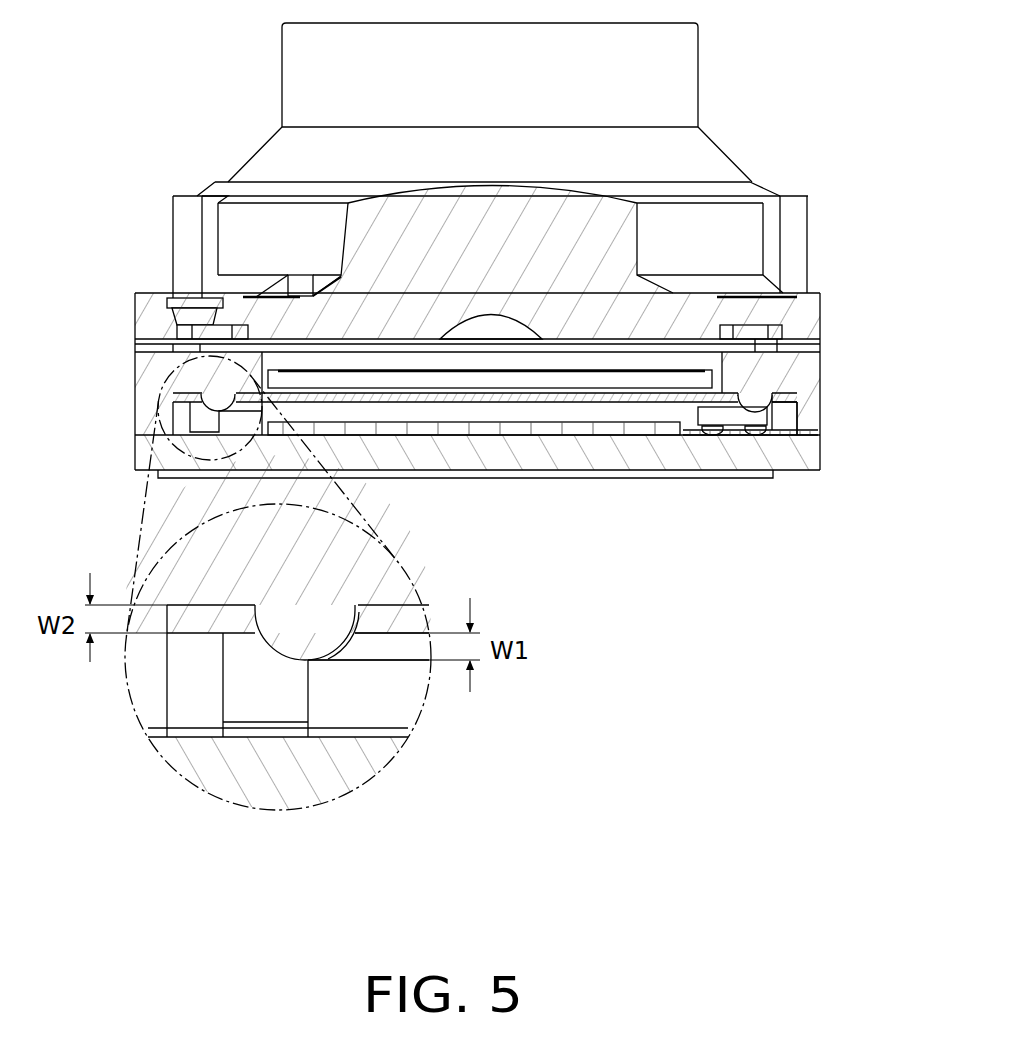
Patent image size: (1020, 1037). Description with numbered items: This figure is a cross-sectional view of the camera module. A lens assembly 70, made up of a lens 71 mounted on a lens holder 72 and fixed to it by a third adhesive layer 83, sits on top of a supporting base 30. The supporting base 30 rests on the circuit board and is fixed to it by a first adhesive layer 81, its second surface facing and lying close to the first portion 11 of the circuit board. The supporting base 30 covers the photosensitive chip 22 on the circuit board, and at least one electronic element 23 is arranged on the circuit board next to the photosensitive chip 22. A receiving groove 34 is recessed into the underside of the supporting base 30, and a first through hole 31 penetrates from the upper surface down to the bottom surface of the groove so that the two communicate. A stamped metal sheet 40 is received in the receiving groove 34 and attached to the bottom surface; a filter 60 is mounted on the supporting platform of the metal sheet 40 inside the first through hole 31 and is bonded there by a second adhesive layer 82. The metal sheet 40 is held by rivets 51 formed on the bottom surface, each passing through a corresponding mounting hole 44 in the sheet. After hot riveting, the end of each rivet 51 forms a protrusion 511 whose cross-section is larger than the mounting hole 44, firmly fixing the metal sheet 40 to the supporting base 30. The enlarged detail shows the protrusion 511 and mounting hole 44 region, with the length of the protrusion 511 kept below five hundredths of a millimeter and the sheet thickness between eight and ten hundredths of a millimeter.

The lens assembly 70 is at (122, 152).
The lens 71 is at (290, 162).
The lens holder 72 is at (160, 310).
The first through hole 31 is at (674, 347).
The third adhesive layer 83 is at (800, 347).
The second adhesive layer 82 is at (702, 388).
The supporting base 30 is at (803, 377).
The first adhesive layer 81 is at (803, 432).
The first portion 11 is at (803, 455).
The receiving groove 34 is at (781, 428).
The electronic element 23 is at (733, 415).
The filter 60 is at (630, 380).
The photosensitive chip 22 is at (551, 428).
The rivet 51 is at (328, 612).
The metal sheet 40 is at (192, 617).
The mounting hole 44 is at (248, 622).
The protrusion 511 is at (303, 643).